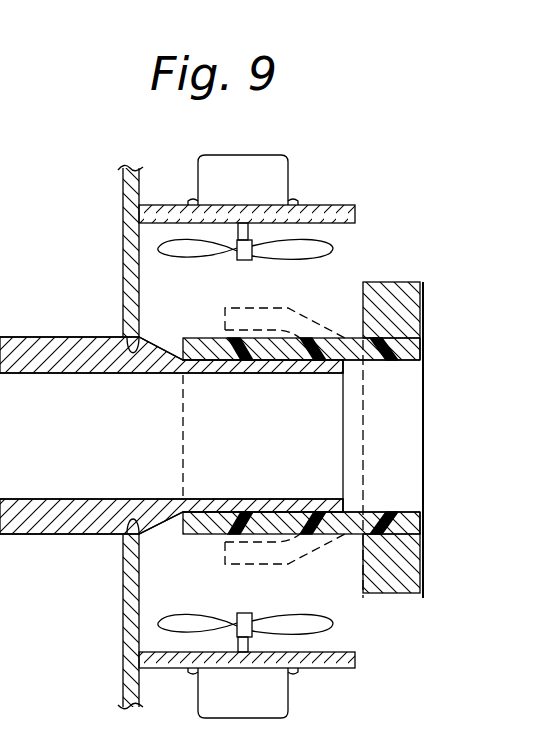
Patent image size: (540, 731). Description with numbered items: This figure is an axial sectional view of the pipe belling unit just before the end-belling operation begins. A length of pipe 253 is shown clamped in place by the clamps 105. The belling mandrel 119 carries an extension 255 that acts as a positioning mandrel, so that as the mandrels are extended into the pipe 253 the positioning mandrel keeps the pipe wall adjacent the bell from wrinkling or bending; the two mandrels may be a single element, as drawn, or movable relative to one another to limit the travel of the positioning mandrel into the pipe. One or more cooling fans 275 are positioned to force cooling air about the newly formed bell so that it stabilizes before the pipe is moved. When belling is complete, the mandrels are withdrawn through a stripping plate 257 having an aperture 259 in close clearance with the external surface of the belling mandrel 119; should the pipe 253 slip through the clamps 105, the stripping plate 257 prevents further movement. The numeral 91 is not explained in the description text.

The belling mandrel 119 is at (78, 357).
The stripping plate 257 is at (139, 293).
The aperture 259 is at (139, 358).
The pipe 253 is at (258, 348).
The extension 255 is at (198, 376).
The clamps 105 is at (400, 306).
The cooling fans 275 is at (318, 250).
The housing 91 is at (427, 730).